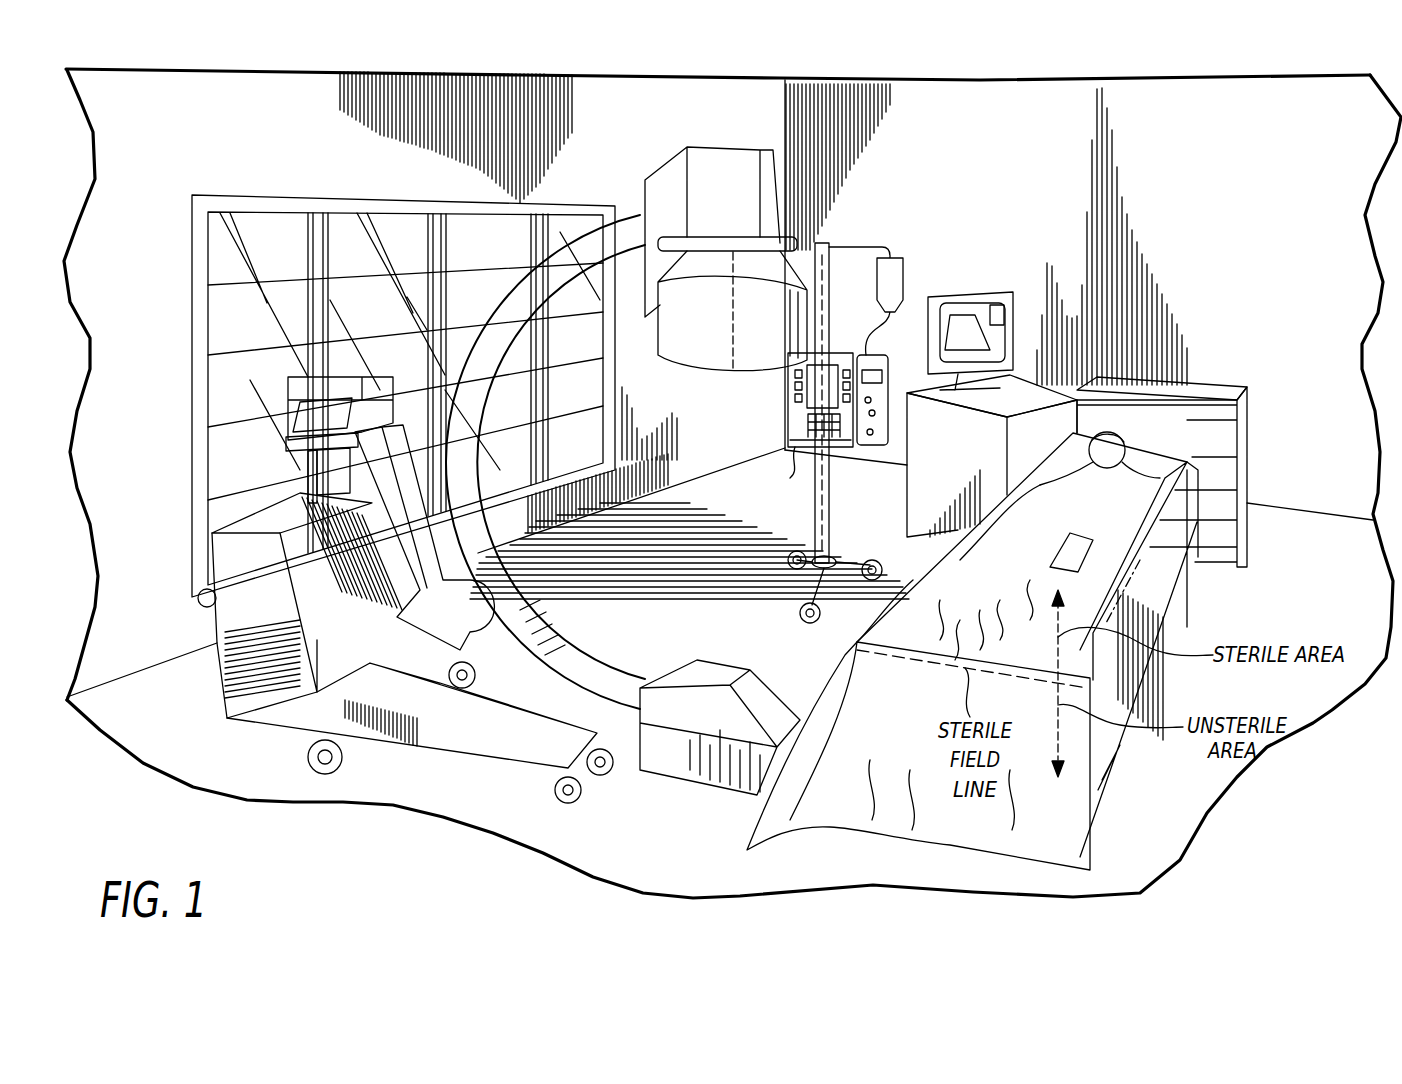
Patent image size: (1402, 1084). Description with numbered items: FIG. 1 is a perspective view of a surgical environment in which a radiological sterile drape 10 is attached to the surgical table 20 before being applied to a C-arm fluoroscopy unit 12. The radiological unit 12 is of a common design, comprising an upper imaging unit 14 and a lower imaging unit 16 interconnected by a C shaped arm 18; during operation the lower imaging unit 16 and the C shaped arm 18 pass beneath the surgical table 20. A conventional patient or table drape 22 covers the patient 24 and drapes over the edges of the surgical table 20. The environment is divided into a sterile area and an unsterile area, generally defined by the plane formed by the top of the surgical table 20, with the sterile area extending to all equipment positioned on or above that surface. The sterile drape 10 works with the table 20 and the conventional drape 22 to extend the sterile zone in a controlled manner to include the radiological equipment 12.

The radiological sterile drape 10 is at (1177, 555).
The C-arm fluoroscopy unit 12 is at (843, 203).
The upper imaging unit 14 is at (733, 372).
The lower imaging unit 16 is at (720, 677).
The C shaped arm 18 is at (568, 633).
The surgical table 20 is at (940, 552).
The table drape 22 is at (762, 826).
The patient 24 is at (1130, 437).